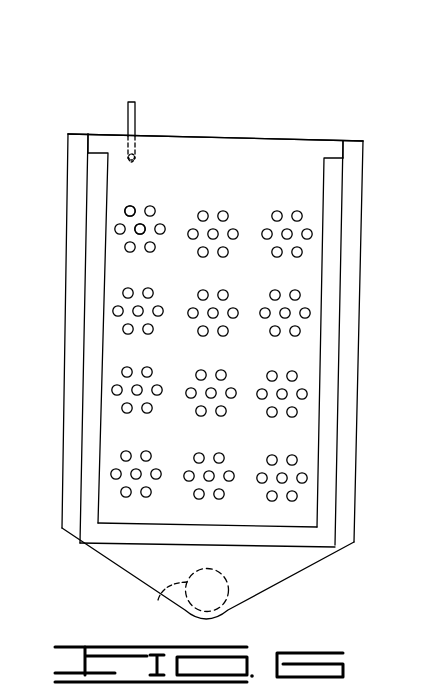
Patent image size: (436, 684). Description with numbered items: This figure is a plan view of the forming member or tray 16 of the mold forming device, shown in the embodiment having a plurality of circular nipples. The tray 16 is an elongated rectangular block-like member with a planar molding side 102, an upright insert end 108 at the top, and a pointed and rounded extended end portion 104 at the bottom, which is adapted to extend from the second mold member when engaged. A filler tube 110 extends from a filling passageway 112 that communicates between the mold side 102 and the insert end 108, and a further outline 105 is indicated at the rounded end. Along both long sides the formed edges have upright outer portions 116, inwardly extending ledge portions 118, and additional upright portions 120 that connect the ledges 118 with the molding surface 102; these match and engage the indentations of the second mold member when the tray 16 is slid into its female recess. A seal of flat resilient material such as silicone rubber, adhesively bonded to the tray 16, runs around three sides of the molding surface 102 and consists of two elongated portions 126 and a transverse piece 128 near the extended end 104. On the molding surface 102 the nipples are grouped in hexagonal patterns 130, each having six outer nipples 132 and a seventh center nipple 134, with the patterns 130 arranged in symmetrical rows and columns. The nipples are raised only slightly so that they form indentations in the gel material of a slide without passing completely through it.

The forming member or tray 16 is at (68, 134).
The molding side 102 is at (160, 145).
The pointed and extended end portion 104 is at (237, 598).
The dashed tab 105 is at (160, 597).
The upright end 108 is at (223, 137).
The filler tube 110 is at (135, 105).
The filling passageway 112 is at (129, 165).
The upright outer portions 116 is at (66, 285).
The inwardly extending ledge portions 118 is at (70, 312).
The additional upright portions 120 is at (83, 346).
The elongated seal portions 126 is at (92, 377).
The transverse seal piece 128 is at (188, 508).
The hexagonal patterns of nipples 130 is at (248, 201).
The outer nipples 132 is at (134, 207).
The center nipple 134 is at (144, 225).